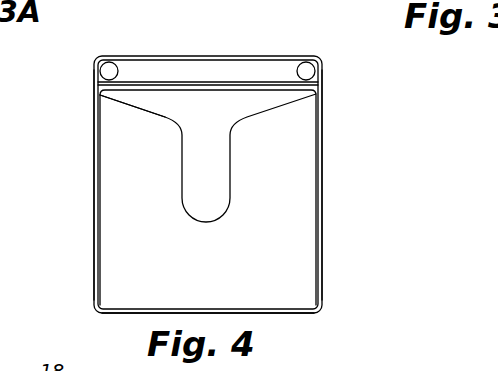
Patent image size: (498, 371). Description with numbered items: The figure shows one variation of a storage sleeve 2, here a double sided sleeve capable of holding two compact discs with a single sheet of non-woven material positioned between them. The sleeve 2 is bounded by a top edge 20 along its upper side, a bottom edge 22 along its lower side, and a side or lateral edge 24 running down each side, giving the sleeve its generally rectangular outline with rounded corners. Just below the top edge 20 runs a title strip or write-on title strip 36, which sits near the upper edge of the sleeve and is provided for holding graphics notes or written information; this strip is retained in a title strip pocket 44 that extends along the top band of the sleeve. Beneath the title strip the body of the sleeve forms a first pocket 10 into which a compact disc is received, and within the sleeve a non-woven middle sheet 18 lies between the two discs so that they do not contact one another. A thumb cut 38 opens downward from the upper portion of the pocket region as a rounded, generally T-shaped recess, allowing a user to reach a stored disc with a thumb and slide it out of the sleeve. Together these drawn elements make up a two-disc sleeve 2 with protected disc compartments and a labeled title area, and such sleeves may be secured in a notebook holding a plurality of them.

The storage sleeve 2 is at (350, 144).
The first pocket 10 is at (147, 99).
The non-woven middle sheet 18 is at (272, 99).
The top edge 20 is at (150, 57).
The bottom edge 22 is at (280, 313).
The side or lateral edge 24 is at (322, 245).
The title strip or write-on title strip 36 is at (247, 67).
The thumb cut 38 is at (182, 192).
The title strip pocket 44 is at (308, 67).